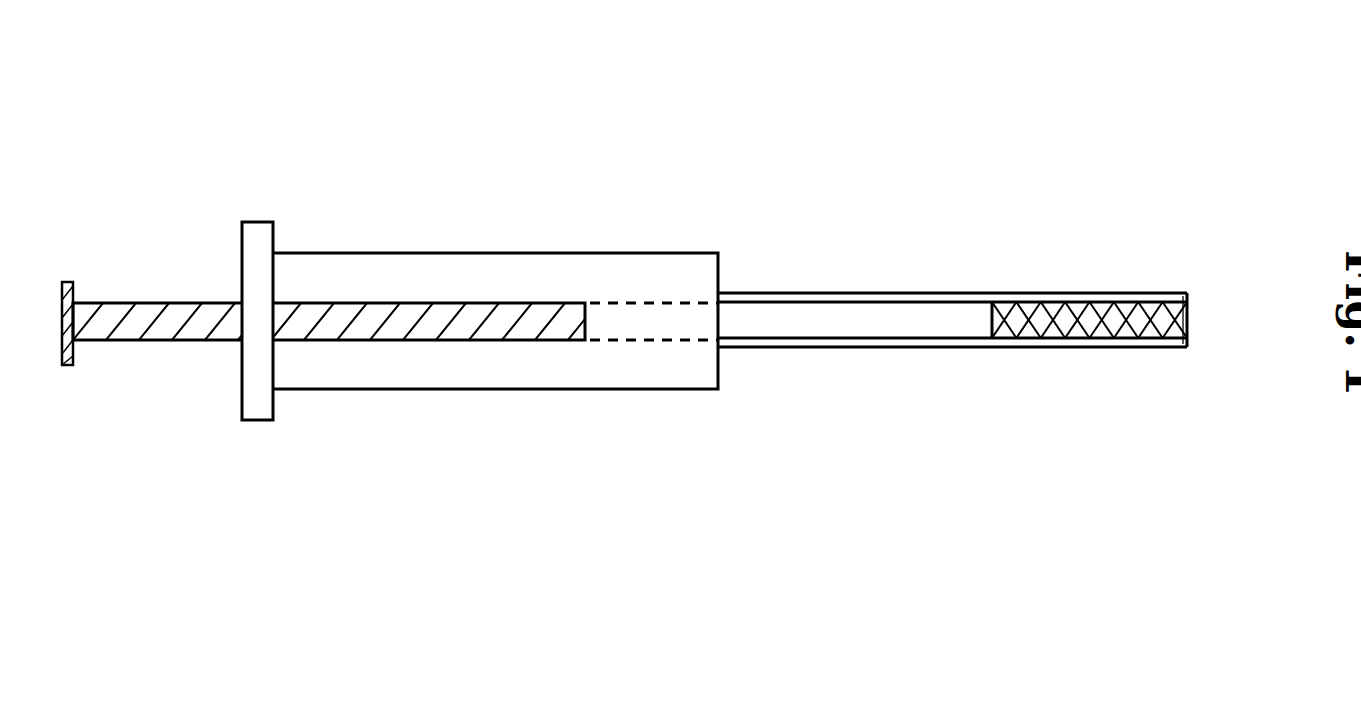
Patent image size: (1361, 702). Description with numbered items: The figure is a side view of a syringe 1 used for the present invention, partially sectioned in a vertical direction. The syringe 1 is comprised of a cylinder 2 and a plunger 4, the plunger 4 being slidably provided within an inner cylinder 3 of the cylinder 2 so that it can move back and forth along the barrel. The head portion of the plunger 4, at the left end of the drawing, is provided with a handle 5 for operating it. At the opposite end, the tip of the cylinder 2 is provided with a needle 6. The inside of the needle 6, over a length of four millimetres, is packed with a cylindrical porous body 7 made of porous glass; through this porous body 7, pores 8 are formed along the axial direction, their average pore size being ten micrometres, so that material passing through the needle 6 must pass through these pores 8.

The syringe 1 is at (313, 203).
The cylinder 2 is at (415, 252).
The inner cylinder 3 is at (633, 345).
The plunger 4 is at (328, 322).
The handle 5 is at (72, 365).
The needle 6 is at (885, 282).
The cylindrical porous body 7 is at (1190, 327).
The pores 8 is at (1083, 307).